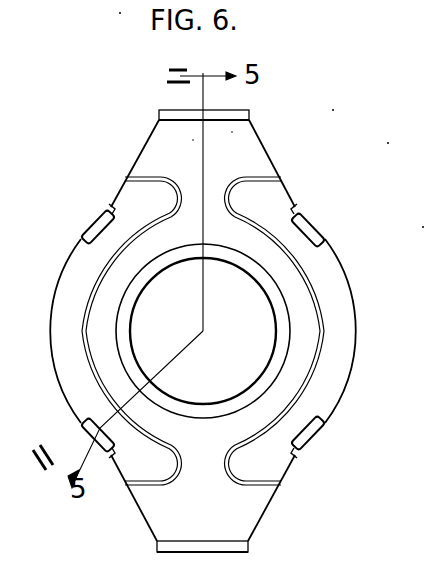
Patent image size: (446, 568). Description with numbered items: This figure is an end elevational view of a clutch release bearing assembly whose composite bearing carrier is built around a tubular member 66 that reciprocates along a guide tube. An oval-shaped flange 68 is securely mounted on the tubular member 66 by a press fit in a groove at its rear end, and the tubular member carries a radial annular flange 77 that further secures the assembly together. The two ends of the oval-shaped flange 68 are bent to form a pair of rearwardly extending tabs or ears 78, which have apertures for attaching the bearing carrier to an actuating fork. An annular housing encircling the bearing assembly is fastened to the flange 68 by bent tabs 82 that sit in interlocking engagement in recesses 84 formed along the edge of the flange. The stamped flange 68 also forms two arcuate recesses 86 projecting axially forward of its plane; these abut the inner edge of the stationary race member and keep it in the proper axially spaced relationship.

The tubular member 66 is at (274, 343).
The oval-shaped flange 68 is at (245, 152).
The radial annular flange 77 is at (119, 302).
The tabs or ears 78 is at (247, 113).
The bent tabs 82 is at (92, 228).
The recesses 84 is at (110, 207).
The arcuate recesses 86 is at (336, 318).